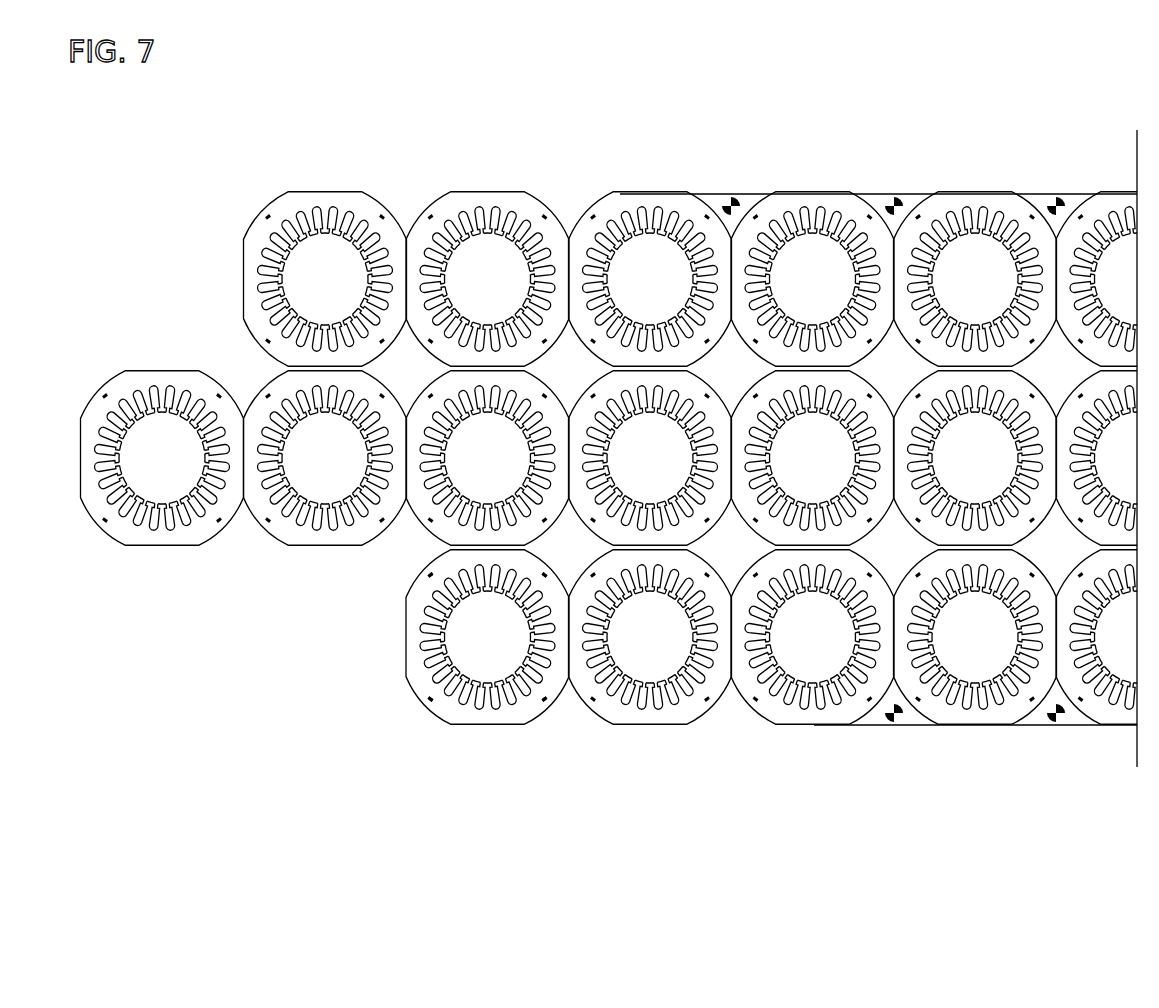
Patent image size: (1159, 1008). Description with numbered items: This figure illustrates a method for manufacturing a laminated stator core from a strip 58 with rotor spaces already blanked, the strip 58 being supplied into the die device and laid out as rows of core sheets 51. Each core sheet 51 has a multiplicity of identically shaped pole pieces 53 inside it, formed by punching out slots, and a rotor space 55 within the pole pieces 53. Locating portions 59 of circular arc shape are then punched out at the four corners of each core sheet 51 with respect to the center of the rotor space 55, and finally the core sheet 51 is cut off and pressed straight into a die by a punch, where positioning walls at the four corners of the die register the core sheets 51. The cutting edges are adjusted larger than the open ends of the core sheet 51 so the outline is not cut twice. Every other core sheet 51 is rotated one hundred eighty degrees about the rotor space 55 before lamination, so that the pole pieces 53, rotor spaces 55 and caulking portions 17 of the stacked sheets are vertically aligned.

The caulking portion 17 is at (430, 578).
The core sheet 51 is at (491, 173).
The pole piece 53 is at (946, 254).
The rotor space 55 is at (790, 275).
The strip 58 is at (903, 722).
The locating portion 59 is at (428, 572).